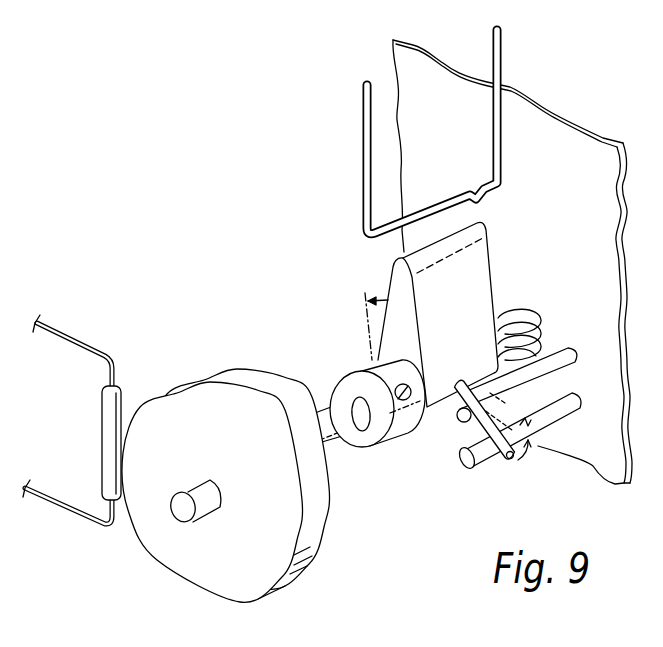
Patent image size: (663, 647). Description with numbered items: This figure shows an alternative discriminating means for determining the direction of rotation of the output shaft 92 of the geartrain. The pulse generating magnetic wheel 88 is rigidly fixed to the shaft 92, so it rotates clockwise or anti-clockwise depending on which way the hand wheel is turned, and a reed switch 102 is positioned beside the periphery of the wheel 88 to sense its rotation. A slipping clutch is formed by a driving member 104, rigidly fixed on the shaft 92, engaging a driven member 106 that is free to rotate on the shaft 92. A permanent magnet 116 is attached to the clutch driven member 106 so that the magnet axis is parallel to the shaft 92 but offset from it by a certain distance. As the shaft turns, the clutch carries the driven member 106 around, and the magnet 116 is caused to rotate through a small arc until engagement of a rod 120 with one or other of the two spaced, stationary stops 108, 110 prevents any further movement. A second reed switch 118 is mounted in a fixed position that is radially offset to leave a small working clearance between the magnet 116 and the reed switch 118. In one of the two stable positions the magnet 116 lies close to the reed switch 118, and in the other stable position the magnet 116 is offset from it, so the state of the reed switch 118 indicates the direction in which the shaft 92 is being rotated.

The pulse generating magnetic wheel 88 is at (245, 382).
The output shaft 92 is at (210, 503).
The reed switch 102 is at (107, 427).
The driving member 104 is at (400, 422).
The driven member 106 is at (482, 297).
The stop 108 is at (457, 423).
The stop 110 is at (483, 466).
The permanent magnet 116 is at (392, 277).
The reed switch 118 is at (417, 217).
The rod 120 is at (517, 463).